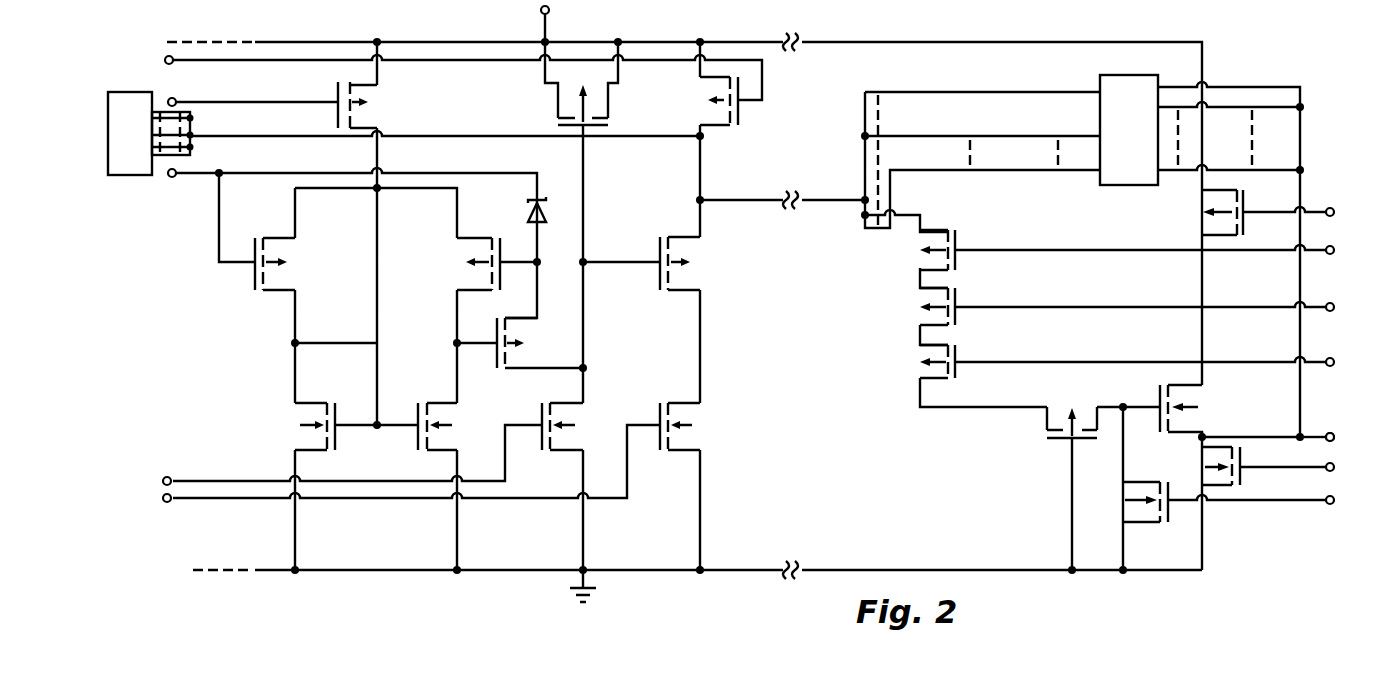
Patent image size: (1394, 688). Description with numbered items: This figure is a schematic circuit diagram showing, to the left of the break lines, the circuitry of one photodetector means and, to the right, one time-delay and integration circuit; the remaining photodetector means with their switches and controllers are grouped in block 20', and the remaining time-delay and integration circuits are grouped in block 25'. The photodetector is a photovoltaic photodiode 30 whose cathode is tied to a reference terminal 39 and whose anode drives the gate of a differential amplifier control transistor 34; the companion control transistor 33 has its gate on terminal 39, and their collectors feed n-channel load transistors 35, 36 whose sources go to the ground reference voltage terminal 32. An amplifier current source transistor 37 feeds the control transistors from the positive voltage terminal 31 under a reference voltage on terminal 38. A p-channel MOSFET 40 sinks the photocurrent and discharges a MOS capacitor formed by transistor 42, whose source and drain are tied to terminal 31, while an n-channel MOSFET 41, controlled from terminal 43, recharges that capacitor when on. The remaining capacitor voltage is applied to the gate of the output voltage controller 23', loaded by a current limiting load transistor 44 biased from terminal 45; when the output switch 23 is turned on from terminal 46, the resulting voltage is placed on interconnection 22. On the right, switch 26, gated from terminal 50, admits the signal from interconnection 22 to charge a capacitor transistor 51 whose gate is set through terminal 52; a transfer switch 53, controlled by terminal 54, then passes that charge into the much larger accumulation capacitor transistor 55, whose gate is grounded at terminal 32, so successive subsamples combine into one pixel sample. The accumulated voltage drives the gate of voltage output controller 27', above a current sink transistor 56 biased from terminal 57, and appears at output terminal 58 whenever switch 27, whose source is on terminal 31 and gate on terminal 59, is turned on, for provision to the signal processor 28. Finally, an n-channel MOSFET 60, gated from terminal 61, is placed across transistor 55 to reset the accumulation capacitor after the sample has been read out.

The block of remaining photodetector means 20' is at (146, 114).
The interconnection 22 is at (754, 196).
The photodetector means output switch 23 is at (697, 426).
The photodetector means output voltage controller 23' is at (699, 263).
The block of remaining time-delay and integration circuits 25' is at (1173, 245).
The switch 26 is at (893, 266).
The switch 27 is at (1198, 212).
The voltage output controller 27' is at (1207, 411).
The signal processor 28 is at (1346, 410).
The photodiode 30 is at (532, 202).
The positive voltage terminal 31 is at (550, 9).
The ground reference voltage terminal 32 is at (588, 574).
The differential amplifier control transistor 33 is at (320, 272).
The differential amplifier control transistor 34 is at (443, 272).
The differential amplifier load transistor 35 is at (287, 437).
The differential amplifier load transistor 36 is at (493, 434).
The amplifier current source transistor 37 is at (417, 112).
The terminal 38 is at (176, 98).
The terminal 39 is at (171, 178).
The p-channel MOSFET 40 is at (565, 354).
The n-channel MOSFET 41 is at (613, 434).
The p-channel MOSFET capacitor 42 is at (578, 70).
The terminal 43 is at (168, 478).
The current limiting load transistor 44 is at (685, 109).
The terminal 45 is at (173, 58).
The terminal 46 is at (170, 503).
The terminal 50 is at (1322, 232).
The p-channel MOSFET capacitor 51 is at (900, 317).
The terminal 52 is at (1318, 290).
The transfer switch transistor 53 is at (903, 376).
The terminal 54 is at (1318, 345).
The accumulation capacitor transistor 55 is at (1088, 401).
The current sink transistor 56 is at (1183, 472).
The terminal 57 is at (1324, 471).
The output terminal 58 is at (1326, 442).
The terminal 59 is at (1328, 210).
The n-channel MOSFET 60 is at (1110, 506).
The terminal 61 is at (1327, 505).